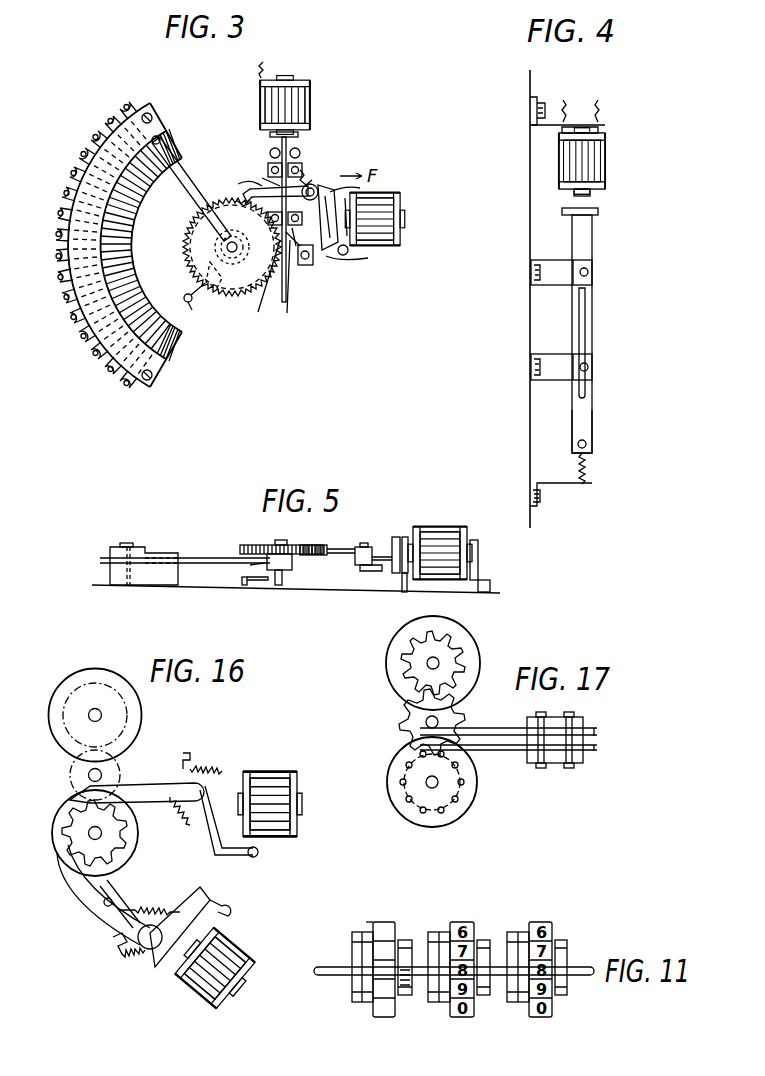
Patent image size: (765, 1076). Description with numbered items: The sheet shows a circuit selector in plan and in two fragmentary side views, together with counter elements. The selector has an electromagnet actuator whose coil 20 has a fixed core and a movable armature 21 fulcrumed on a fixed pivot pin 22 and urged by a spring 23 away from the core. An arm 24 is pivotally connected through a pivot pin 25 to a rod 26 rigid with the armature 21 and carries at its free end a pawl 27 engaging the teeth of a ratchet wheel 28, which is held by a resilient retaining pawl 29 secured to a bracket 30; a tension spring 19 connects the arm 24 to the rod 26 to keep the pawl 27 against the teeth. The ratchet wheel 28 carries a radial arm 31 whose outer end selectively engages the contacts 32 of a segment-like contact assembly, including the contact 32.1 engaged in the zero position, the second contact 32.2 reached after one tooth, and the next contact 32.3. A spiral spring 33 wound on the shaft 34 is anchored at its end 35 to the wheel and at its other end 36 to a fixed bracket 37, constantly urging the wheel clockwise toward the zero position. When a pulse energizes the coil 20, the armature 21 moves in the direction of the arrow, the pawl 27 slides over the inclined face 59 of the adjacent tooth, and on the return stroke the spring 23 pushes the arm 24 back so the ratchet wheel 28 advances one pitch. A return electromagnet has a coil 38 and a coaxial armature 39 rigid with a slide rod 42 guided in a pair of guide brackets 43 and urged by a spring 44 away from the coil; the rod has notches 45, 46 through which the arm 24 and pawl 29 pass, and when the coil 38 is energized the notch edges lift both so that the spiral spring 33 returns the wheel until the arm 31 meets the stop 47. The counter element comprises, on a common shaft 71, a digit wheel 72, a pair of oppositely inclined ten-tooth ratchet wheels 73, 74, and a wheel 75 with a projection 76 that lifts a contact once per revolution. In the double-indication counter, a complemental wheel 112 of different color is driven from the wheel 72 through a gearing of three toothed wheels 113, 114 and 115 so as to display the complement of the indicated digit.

In FIG. 3, the tension spring 19 is at (306, 235).
In FIG. 3, the coil 20 is at (386, 217).
In FIG. 5, the coil 20 is at (449, 559).
In FIG. 3, the movable armature 21 is at (362, 187).
In FIG. 5, the movable armature 21 is at (394, 541).
In FIG. 3, the fixed pivot pin 22 is at (358, 260).
In FIG. 5, the fixed pivot pin 22 is at (403, 582).
In FIG. 3, the spring 23 is at (306, 170).
In FIG. 3, the arm 24 is at (252, 190).
In FIG. 5, the arm 24 is at (341, 545).
In FIG. 3, the pivot pin 25 is at (318, 185).
In FIG. 3, the rod 26 is at (336, 254).
In FIG. 5, the rod 26 is at (385, 566).
In FIG. 3, the pawl 27 is at (240, 184).
In FIG. 3, the ratchet wheel 28 is at (240, 294).
In FIG. 5, the ratchet wheel 28 is at (252, 544).
In FIG. 3, the resilient retaining pawl 29 is at (295, 288).
In FIG. 3, the bracket 30 is at (306, 267).
In FIG. 3, the radial arm 31 is at (186, 190).
In FIG. 5, the radial arm 31 is at (196, 557).
In FIG. 3, the contacts 32 is at (130, 225).
In FIG. 5, the contacts 32 is at (158, 552).
In FIG. 3, the contact 32.1 is at (125, 103).
In FIG. 3, the second contact 32.2 is at (105, 116).
In FIG. 3, the contact 32.3 is at (91, 134).
In FIG. 3, the spiral spring 33 is at (214, 290).
In FIG. 5, the spiral spring 33 is at (285, 583).
In FIG. 3, the shaft 34 is at (226, 249).
In FIG. 5, the shaft 34 is at (284, 539).
In FIG. 3, the spring end 35 is at (204, 243).
In FIG. 3, the spring end 36 is at (184, 296).
In FIG. 5, the spring end 36 is at (250, 585).
In FIG. 3, the fixed bracket 37 is at (192, 309).
In FIG. 5, the fixed bracket 37 is at (246, 566).
In FIG. 3, the coil 38 is at (284, 106).
In FIG. 4, the coil 38 is at (584, 168).
In FIG. 3, the movable armature 39 is at (282, 142).
In FIG. 4, the movable armature 39 is at (600, 213).
In FIG. 3, the slide rod 42 is at (292, 142).
In FIG. 4, the slide rod 42 is at (592, 246).
In FIG. 4, the guide brackets 43 is at (552, 283).
In FIG. 4, the spring 44 is at (586, 477).
In FIG. 3, the notch 45 is at (266, 182).
In FIG. 4, the notch 45 is at (578, 330).
In FIG. 3, the notch 46 is at (261, 287).
In FIG. 4, the notch 46 is at (574, 413).
In FIG. 3, the stop 47 is at (166, 150).
In FIG. 3, the inclined face 59 is at (236, 204).
In FIG. 11, the shaft 71 is at (332, 977).
In FIG. 11, the wheel 72 is at (374, 1011).
In FIG. 11, the ratchet wheel 73 is at (355, 955).
In FIG. 11, the ratchet wheel 74 is at (371, 935).
In FIG. 11, the wheel 75 is at (407, 940).
In FIG. 11, the projection 76 is at (406, 990).
In FIG. 16, the complemental wheel 112 is at (138, 727).
In FIG. 17, the complemental wheel 112 is at (390, 686).
In FIG. 16, the toothed wheel 113 is at (62, 822).
In FIG. 17, the toothed wheel 113 is at (446, 790).
In FIG. 16, the toothed wheel 114 is at (112, 769).
In FIG. 17, the toothed wheel 114 is at (462, 718).
In FIG. 16, the toothed wheel 115 is at (120, 703).
In FIG. 17, the toothed wheel 115 is at (455, 650).